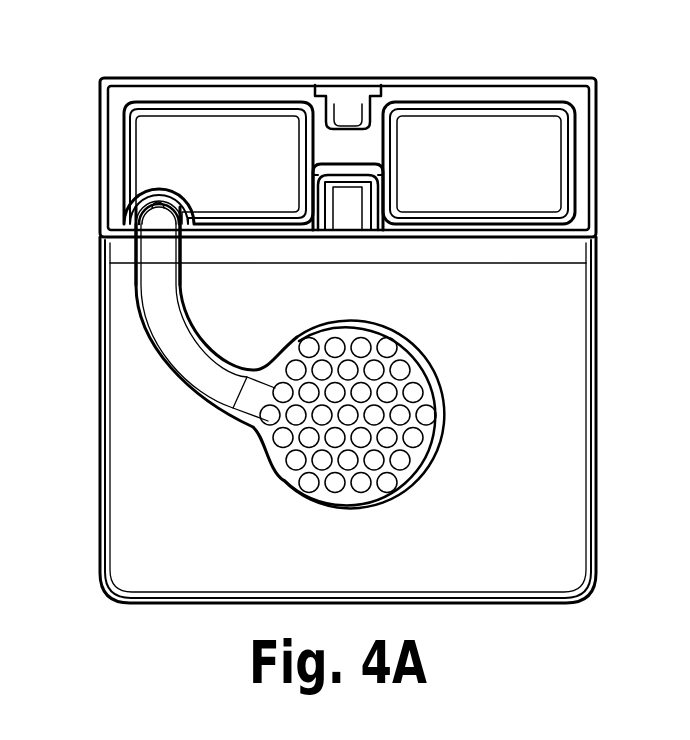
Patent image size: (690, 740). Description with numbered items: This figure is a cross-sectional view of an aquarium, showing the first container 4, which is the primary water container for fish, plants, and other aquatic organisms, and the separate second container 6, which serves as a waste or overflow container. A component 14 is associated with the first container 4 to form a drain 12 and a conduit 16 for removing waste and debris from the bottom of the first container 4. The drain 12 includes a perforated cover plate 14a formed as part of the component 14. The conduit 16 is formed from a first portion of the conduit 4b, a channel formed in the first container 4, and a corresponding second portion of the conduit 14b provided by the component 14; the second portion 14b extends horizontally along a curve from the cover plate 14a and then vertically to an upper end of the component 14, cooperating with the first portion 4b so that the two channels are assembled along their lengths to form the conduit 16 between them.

The first container 4 is at (597, 460).
The first portion of the conduit 4b is at (163, 198).
The second container 6 is at (597, 123).
The drain 12 is at (337, 420).
The component 14 is at (141, 348).
The cover plate 14a is at (437, 378).
The second portion of the conduit 14b is at (155, 287).
The conduit 16 is at (155, 222).